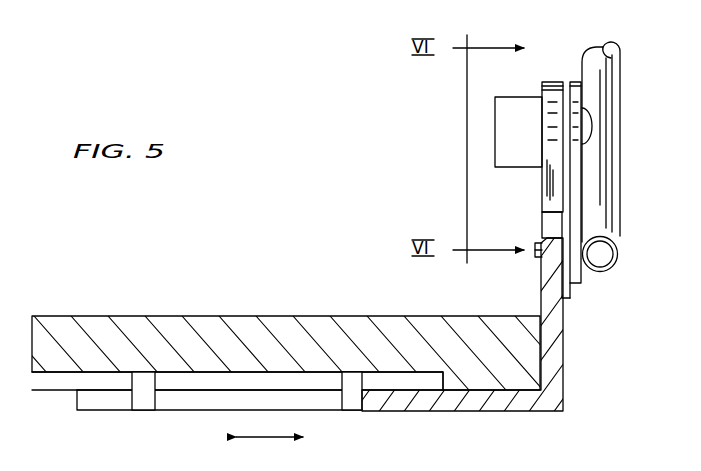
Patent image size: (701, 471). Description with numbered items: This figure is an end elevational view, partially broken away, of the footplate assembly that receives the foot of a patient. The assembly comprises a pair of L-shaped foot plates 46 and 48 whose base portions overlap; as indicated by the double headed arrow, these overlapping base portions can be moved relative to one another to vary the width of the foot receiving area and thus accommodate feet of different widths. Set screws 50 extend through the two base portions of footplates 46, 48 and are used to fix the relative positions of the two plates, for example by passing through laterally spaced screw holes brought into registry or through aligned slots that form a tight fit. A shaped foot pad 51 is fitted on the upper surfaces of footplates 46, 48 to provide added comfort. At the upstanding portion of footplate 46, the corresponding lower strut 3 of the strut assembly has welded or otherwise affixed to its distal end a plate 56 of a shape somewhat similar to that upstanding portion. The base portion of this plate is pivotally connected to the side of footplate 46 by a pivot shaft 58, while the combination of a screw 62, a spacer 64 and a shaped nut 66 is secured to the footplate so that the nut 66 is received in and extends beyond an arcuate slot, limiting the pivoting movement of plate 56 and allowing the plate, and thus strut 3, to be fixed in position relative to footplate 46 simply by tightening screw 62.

The lower strut 3 is at (615, 68).
The footplate 46 is at (555, 391).
The footplate 48 is at (74, 377).
The set screws 50 is at (142, 397).
The foot pad 51 is at (346, 316).
The plate 56 is at (578, 98).
The pivot shaft 58 is at (535, 258).
The screw 62 is at (590, 128).
The spacer 64 is at (571, 80).
The shaped nut 66 is at (518, 155).